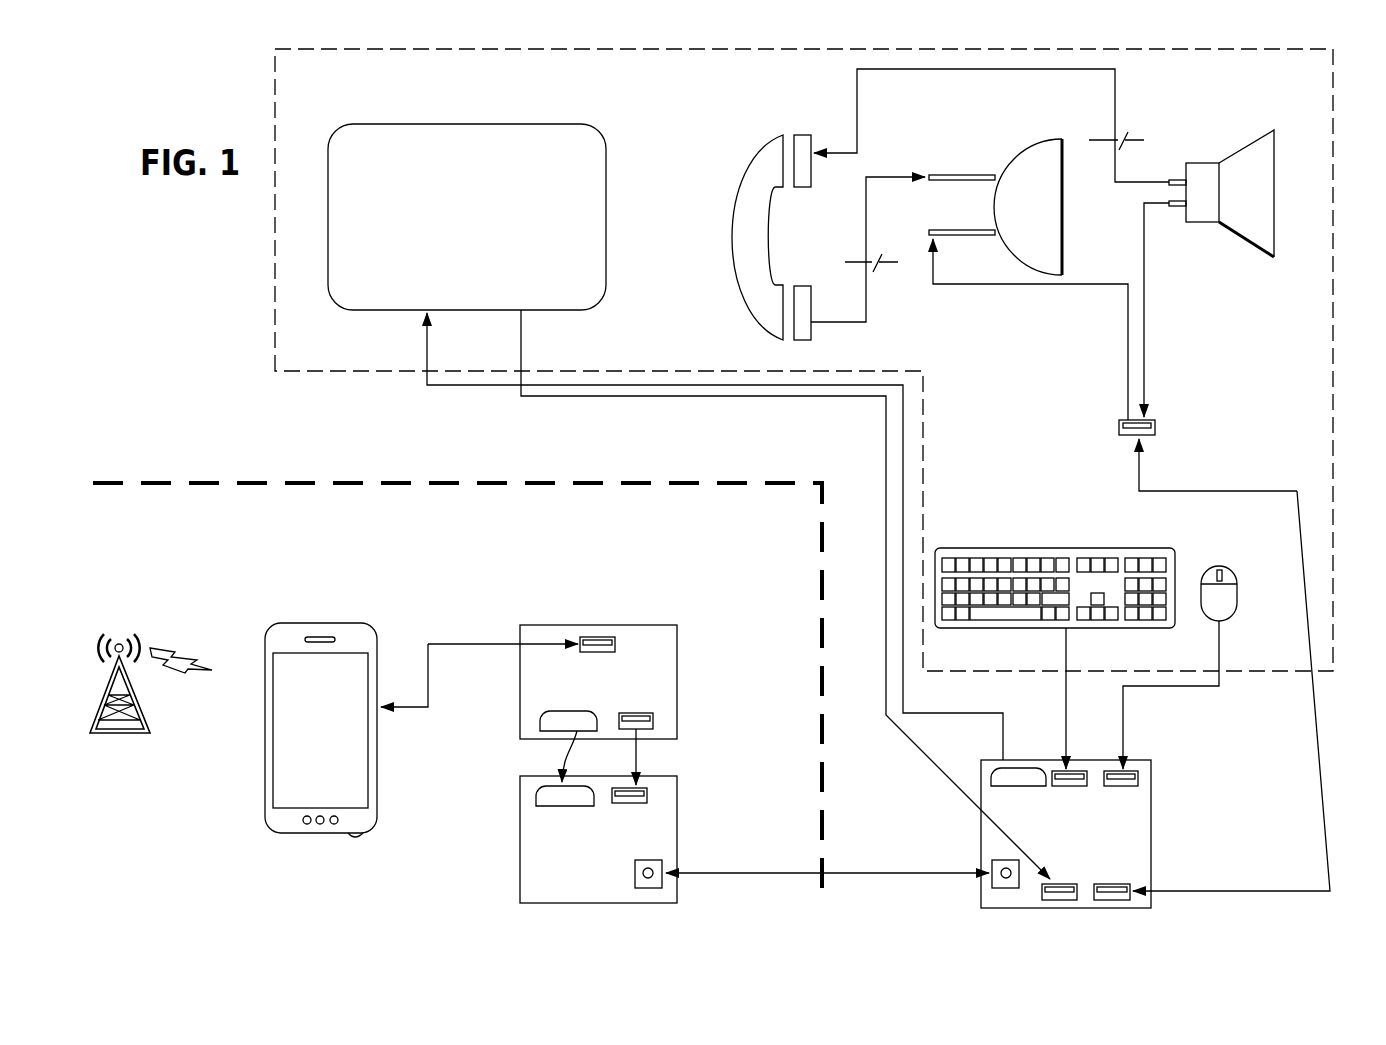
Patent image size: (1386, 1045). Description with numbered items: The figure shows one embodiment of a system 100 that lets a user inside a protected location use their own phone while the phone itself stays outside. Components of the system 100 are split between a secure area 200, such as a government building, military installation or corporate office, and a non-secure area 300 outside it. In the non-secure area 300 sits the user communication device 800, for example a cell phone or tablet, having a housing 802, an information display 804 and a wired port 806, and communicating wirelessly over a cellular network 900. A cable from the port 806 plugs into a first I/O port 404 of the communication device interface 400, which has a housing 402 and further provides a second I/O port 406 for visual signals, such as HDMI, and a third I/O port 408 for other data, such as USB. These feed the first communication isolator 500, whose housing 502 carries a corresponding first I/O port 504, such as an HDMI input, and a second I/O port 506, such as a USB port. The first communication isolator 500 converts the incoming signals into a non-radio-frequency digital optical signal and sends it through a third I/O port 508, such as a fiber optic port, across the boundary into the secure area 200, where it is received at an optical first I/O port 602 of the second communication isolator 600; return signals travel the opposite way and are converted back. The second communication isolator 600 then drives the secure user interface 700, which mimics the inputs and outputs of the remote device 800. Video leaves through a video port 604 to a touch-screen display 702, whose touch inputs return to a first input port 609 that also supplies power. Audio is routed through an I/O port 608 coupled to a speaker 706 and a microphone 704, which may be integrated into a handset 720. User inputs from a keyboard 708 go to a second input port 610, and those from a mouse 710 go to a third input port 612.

The system 100 is at (238, 85).
The secure area 200 is at (241, 436).
The non-secure area 300 is at (479, 589).
The communication device interface 400 is at (710, 584).
The housing 402 is at (540, 625).
The first I/O port 404 is at (595, 637).
The second I/O port 406 is at (545, 713).
The third I/O port 408 is at (655, 715).
The first communication isolator 500 is at (690, 901).
The housing 502 is at (520, 905).
The first I/O port 504 is at (543, 787).
The second I/O port 506 is at (650, 793).
The third I/O port 508 is at (650, 859).
The second communication isolator 600 is at (1145, 918).
The first I/O port 602 is at (992, 880).
The video port 604 is at (1020, 768).
The I/O port 608 is at (1140, 903).
The first input port 609 is at (1064, 900).
The second input port 610 is at (1076, 771).
The third input port 612 is at (1133, 771).
The secure user interface 700 is at (1332, 680).
The touch-screen display 702 is at (614, 180).
The microphone 704 is at (1007, 264).
The speaker 706 is at (1242, 252).
The keyboard 708 is at (1065, 548).
The mouse 710 is at (1224, 566).
The handset 720 is at (762, 135).
The user communication device 800 is at (300, 843).
The housing 802 is at (347, 630).
The information display 804 is at (287, 777).
The port 806 is at (357, 839).
The cellular network 900 is at (193, 692).